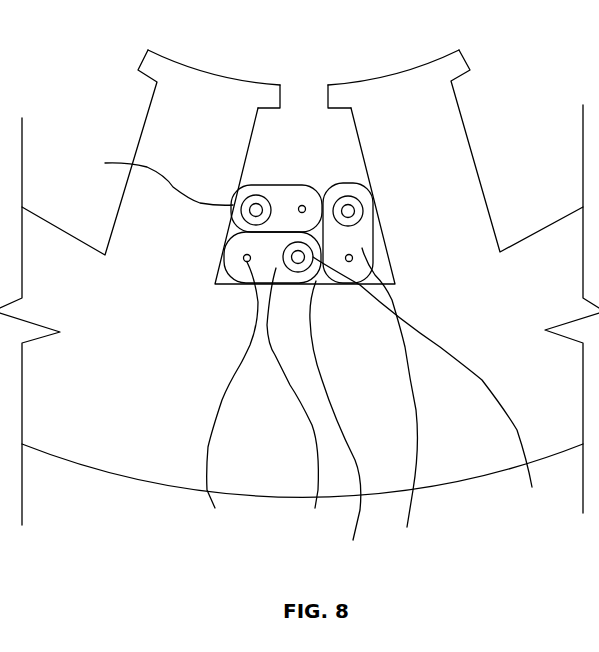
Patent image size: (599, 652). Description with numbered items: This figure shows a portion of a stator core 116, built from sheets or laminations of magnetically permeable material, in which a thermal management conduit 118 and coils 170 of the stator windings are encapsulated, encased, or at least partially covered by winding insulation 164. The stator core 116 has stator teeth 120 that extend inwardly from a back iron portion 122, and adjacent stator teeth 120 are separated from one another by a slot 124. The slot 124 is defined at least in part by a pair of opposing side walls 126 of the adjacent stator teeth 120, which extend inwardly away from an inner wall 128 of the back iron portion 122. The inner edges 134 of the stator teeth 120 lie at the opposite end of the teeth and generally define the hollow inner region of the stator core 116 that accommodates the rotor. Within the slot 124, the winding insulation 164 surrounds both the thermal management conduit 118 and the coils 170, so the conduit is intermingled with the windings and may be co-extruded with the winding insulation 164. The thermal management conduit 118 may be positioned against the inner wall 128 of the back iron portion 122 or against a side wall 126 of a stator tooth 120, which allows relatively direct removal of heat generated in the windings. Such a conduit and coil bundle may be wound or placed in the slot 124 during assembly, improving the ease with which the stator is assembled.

The stator core 116 is at (450, 465).
The thermal management conduit 118 is at (267, 192).
The stator teeth 120 is at (147, 150).
The back iron portion 122 is at (147, 462).
The slot 124 is at (297, 118).
The side walls 126 is at (147, 107).
The inner wall 128 is at (341, 426).
The inner edges 134 is at (208, 70).
The winding insulation 164 is at (305, 341).
The coil 170 is at (325, 192).